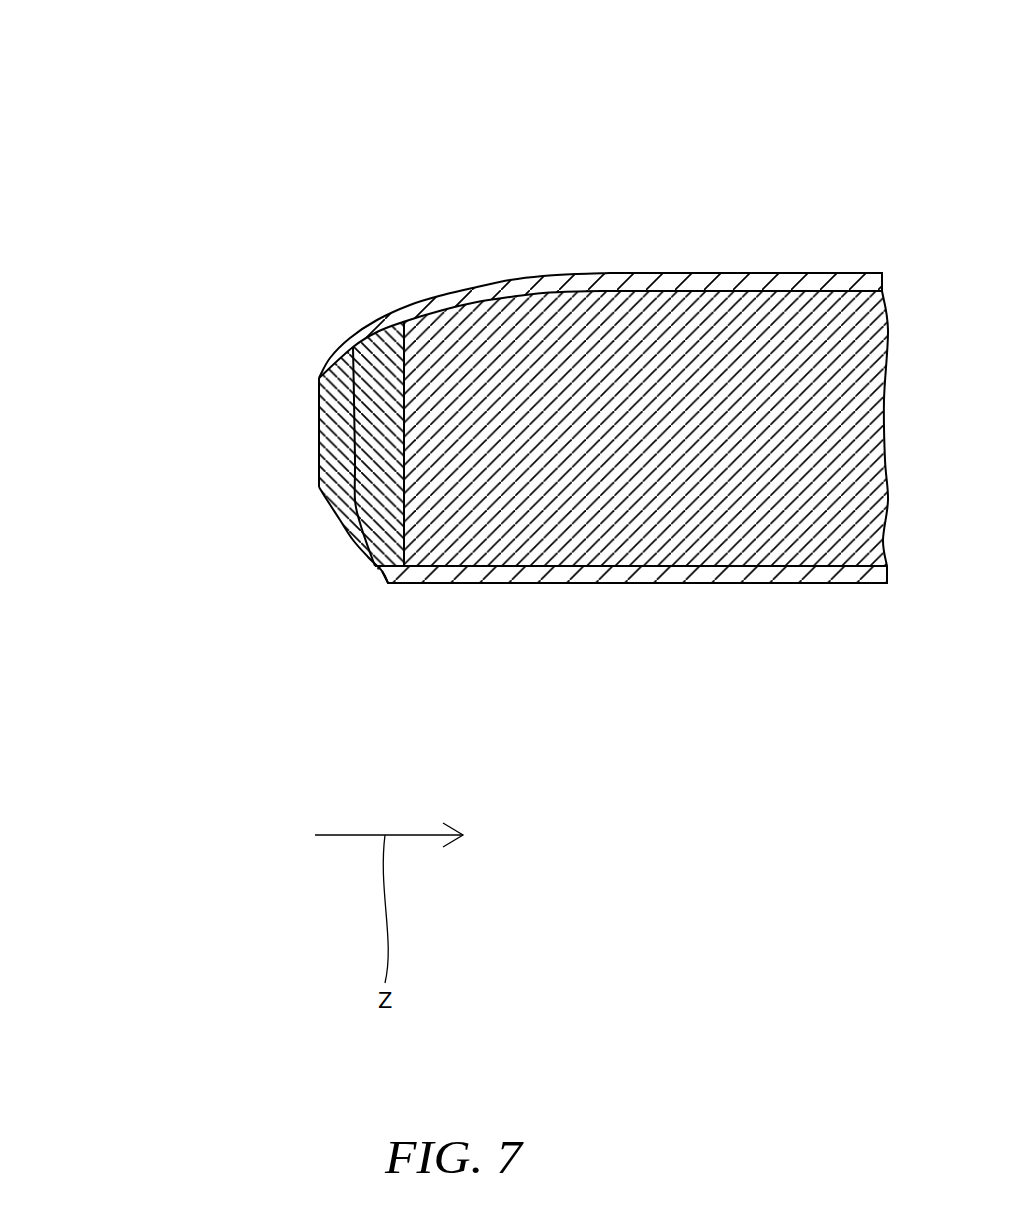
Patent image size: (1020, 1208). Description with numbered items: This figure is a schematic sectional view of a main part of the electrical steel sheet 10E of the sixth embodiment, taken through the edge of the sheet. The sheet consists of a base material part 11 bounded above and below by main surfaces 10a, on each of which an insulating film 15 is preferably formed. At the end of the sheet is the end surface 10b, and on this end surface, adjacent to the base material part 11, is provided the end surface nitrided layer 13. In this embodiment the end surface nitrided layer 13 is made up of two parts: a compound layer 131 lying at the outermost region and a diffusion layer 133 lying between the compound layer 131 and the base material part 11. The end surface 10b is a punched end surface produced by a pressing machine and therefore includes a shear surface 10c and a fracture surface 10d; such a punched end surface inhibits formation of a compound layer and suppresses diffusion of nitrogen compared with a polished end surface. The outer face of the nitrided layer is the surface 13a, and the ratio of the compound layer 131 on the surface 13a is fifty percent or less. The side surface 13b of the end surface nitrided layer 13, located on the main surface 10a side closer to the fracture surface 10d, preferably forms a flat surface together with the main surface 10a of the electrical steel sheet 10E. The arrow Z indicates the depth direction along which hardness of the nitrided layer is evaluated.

The electrical steel sheet 10E is at (515, 138).
The base material part 11 is at (607, 338).
The insulating film 15 is at (688, 273).
The main surface 10a is at (838, 275).
The end surface nitrided layer 13 is at (370, 319).
The compound layer 131 is at (353, 347).
The diffusion layer 133 is at (383, 393).
The surface of the end surface nitrided layer 13a is at (255, 480).
The side surface 13b is at (388, 583).
The end surface 10b is at (222, 480).
The shear surface 10c is at (320, 417).
The fracture surface 10d is at (340, 523).